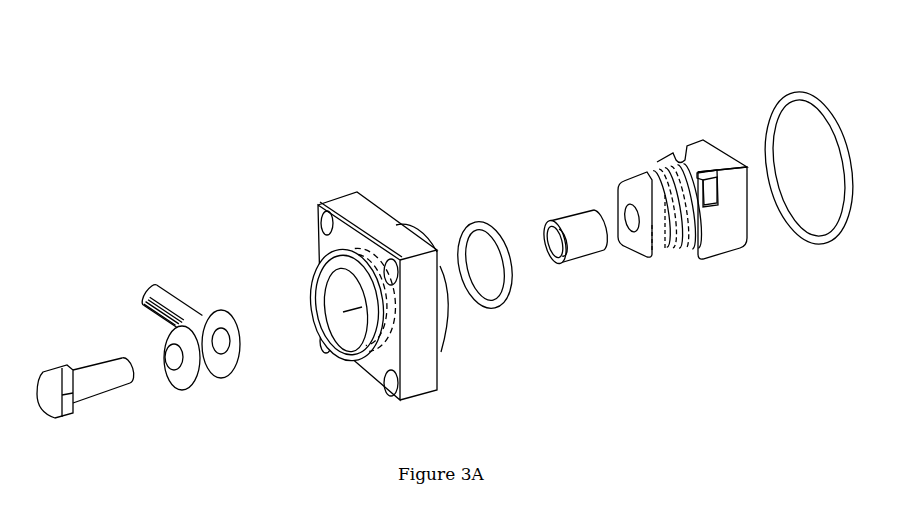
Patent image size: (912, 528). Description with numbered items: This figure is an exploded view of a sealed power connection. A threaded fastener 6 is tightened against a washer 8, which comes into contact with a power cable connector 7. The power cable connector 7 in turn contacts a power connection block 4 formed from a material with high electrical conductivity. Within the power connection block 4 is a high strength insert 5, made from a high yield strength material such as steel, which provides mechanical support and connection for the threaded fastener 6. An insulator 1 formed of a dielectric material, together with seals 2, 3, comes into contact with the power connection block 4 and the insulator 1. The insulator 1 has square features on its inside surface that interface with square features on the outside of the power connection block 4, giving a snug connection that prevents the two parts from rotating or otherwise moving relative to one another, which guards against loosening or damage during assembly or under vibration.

The insulator 1 is at (315, 263).
The seal 2 is at (458, 223).
The seal 3 is at (773, 97).
The power connection block 4 is at (655, 152).
The high strength insert 5 is at (562, 212).
The threaded fastener 6 is at (75, 364).
The power cable connector 7 is at (157, 277).
The washer 8 is at (157, 337).